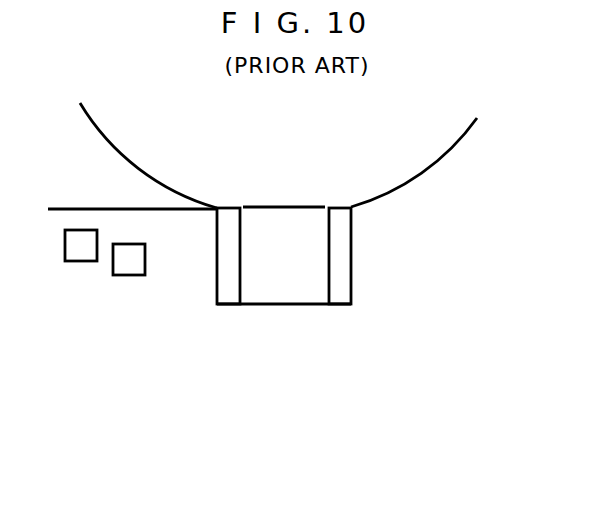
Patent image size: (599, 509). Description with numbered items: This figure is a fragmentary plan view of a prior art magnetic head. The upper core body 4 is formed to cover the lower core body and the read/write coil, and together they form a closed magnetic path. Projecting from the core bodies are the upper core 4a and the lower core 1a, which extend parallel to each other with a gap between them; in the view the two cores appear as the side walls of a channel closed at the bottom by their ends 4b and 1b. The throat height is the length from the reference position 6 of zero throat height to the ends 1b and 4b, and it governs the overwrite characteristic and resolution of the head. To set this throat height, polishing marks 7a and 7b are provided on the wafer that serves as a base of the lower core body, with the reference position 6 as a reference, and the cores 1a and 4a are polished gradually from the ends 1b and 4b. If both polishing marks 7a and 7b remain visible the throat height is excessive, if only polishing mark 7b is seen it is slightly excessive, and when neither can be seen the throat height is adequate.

The upper core body 4 is at (412, 162).
The reference position 6 is at (90, 208).
The lower core 1a is at (342, 272).
The upper core 4a is at (315, 234).
The end of upper core 4b is at (268, 305).
The end of lower core 1b is at (318, 305).
The polishing mark 7a is at (128, 271).
The polishing mark 7b is at (79, 256).